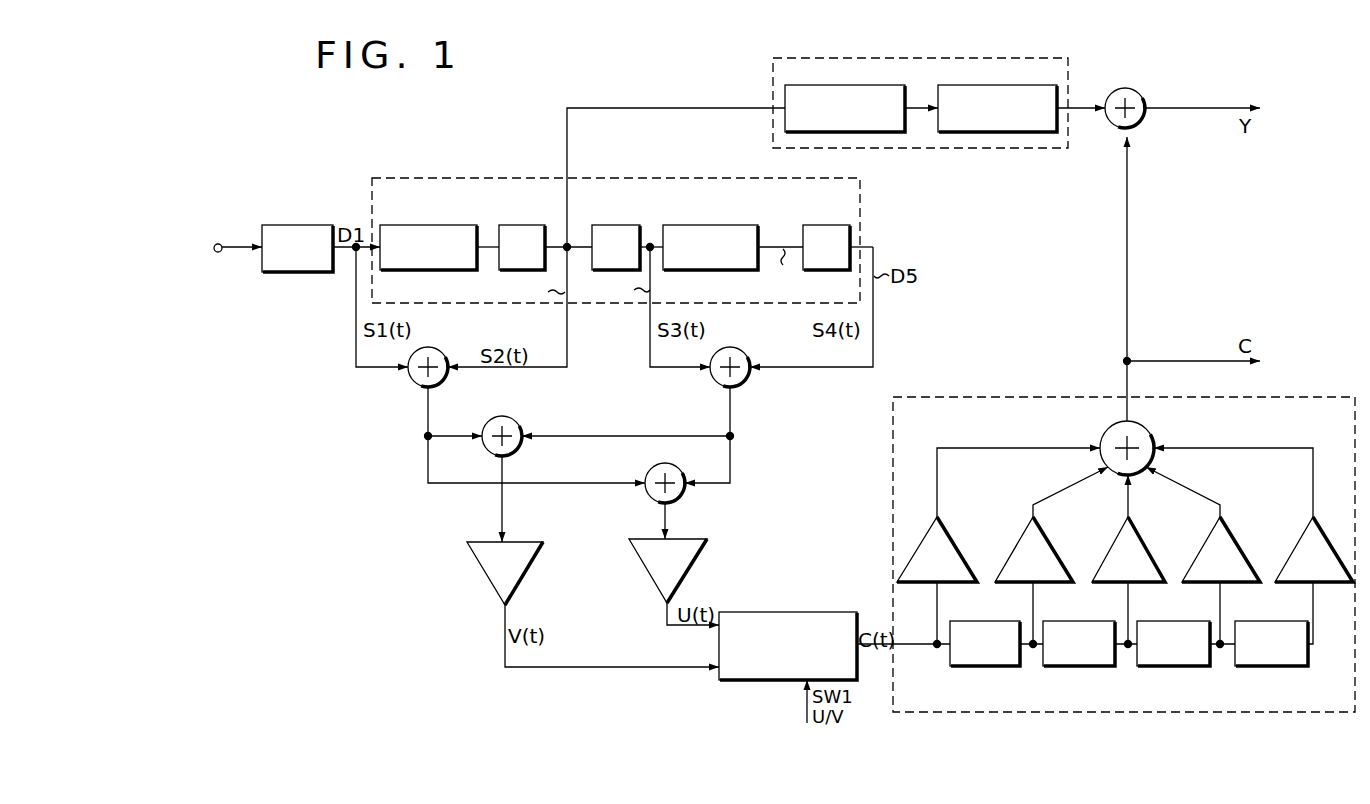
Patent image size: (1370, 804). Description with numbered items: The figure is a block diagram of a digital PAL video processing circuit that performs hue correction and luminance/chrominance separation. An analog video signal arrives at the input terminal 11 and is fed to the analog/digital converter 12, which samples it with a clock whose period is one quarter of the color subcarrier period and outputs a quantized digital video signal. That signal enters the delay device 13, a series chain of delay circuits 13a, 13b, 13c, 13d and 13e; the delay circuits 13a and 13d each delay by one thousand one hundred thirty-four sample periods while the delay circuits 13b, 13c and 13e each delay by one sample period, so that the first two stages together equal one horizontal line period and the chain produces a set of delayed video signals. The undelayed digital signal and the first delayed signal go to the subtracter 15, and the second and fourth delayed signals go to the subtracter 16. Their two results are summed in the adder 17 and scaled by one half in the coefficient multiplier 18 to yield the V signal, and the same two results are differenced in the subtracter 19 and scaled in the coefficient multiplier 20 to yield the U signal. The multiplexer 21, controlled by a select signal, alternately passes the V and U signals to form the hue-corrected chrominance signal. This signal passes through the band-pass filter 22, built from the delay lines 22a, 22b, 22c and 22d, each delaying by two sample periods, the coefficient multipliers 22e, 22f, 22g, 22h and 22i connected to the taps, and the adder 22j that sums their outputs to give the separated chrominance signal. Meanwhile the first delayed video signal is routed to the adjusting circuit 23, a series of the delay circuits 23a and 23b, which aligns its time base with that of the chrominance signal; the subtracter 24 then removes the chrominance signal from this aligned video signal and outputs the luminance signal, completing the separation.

The input terminal 11 is at (217, 252).
The analog/digital converter 12 is at (298, 225).
The delay device 13 is at (433, 177).
The delay circuit 13a is at (430, 225).
The delay circuit 13b is at (518, 225).
The delay circuit 13c is at (617, 225).
The delay circuit 13d is at (710, 225).
The delay circuit 13e is at (826, 225).
The subtracter 15 is at (410, 387).
The subtracter 16 is at (715, 387).
The adder 17 is at (502, 416).
The coefficient multiplier 18 is at (488, 585).
The subtracter 19 is at (644, 499).
The coefficient multiplier 20 is at (648, 584).
The multiplexer 21 is at (781, 612).
The band-pass filter 22 is at (893, 497).
The delay line 22a is at (988, 622).
The delay line 22b is at (1081, 622).
The delay line 22c is at (1174, 622).
The delay line 22d is at (1272, 622).
The coefficient multiplier 22e is at (954, 556).
The coefficient multiplier 22f is at (1048, 556).
The coefficient multiplier 22g is at (1141, 556).
The coefficient multiplier 22h is at (1235, 556).
The coefficient multiplier 22i is at (1304, 529).
The adder 22j is at (1142, 473).
The adjusting circuit 23 is at (922, 58).
The delay circuit 23a is at (833, 85).
The delay circuit 23b is at (984, 85).
The subtracter 24 is at (1125, 88).